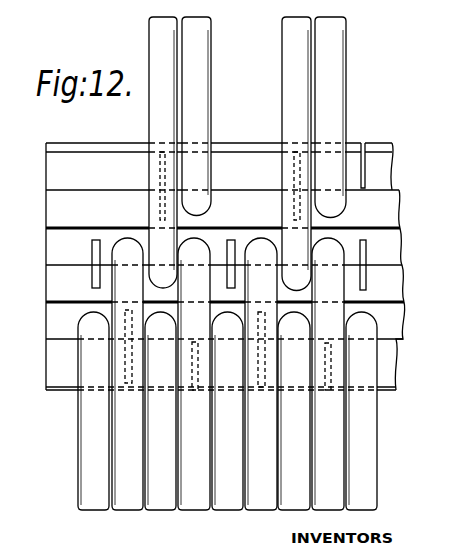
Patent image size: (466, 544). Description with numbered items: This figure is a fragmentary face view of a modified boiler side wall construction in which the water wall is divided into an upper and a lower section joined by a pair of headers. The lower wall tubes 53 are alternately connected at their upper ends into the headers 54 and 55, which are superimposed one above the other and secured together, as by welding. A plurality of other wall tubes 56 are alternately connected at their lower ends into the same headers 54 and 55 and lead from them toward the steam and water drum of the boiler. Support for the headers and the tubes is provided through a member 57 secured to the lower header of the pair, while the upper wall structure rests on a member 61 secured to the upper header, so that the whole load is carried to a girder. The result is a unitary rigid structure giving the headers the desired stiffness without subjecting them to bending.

The wall tubes 53 is at (160, 443).
The header 54 is at (57, 283).
The header 55 is at (55, 208).
The other wall tubes 56 is at (165, 88).
The member 57 is at (50, 369).
The member 61 is at (57, 163).